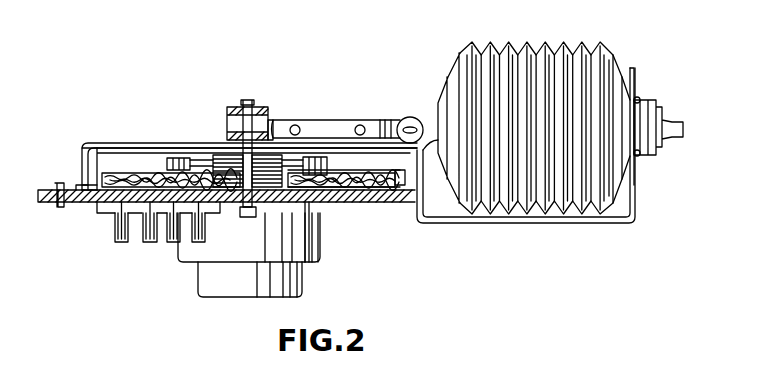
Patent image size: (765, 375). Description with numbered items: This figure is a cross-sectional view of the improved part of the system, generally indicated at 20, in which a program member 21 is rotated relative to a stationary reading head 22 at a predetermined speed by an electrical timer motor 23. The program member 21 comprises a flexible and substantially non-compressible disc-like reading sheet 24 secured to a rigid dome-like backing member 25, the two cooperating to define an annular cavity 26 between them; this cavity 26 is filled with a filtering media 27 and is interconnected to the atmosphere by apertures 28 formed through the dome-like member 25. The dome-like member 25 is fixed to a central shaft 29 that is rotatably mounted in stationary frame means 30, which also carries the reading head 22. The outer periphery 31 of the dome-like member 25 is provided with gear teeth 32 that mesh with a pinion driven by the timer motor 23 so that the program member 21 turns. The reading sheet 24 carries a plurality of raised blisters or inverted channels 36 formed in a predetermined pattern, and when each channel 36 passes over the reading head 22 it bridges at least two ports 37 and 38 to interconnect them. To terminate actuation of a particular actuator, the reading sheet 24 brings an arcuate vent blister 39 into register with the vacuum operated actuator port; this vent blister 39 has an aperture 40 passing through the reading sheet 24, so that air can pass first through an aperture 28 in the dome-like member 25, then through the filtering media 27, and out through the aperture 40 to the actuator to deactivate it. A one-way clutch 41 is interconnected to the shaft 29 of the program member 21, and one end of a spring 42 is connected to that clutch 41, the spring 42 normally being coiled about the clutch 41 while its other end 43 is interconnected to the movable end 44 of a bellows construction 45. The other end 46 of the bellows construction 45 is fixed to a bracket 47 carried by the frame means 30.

The improved part of the system 20 is at (378, 48).
The program member 21 is at (337, 170).
The stationary reading head 22 is at (110, 197).
The electrical timer motor 23 is at (230, 287).
The reading sheet 24 is at (363, 193).
The dome-like backing member 25 is at (375, 173).
The annular cavity 26 is at (317, 187).
The filtering media 27 is at (367, 197).
The apertures 28 is at (147, 173).
The central shaft 29 is at (253, 205).
The frame means 30 is at (293, 197).
The outer periphery 31 is at (97, 172).
The gear teeth 32 is at (97, 185).
The raised blisters or inverted channels 36 is at (127, 187).
The port 37 is at (122, 195).
The port 38 is at (150, 197).
The arcuate vent blister 39 is at (198, 187).
The aperture 40 is at (192, 188).
The one-way clutch 41 is at (262, 110).
The spring 42 is at (268, 128).
The other end of the spring 43 is at (410, 117).
The movable end of the bellows construction 44 is at (438, 100).
The bellows construction 45 is at (530, 46).
The other end of the bellows construction 46 is at (630, 75).
The bracket 47 is at (640, 86).